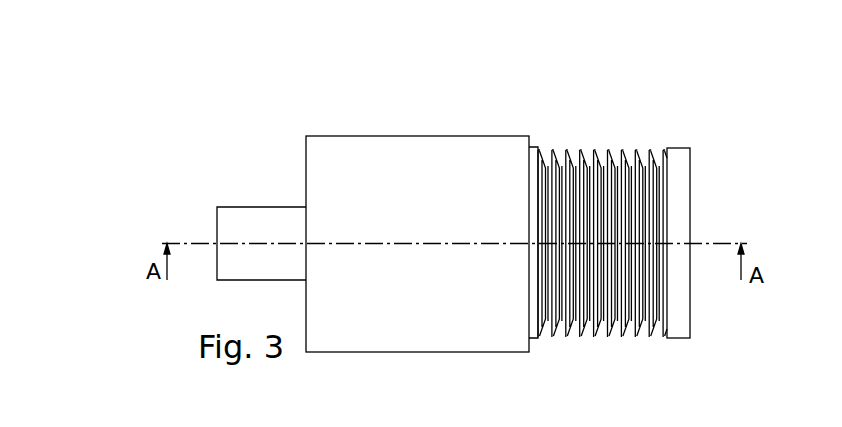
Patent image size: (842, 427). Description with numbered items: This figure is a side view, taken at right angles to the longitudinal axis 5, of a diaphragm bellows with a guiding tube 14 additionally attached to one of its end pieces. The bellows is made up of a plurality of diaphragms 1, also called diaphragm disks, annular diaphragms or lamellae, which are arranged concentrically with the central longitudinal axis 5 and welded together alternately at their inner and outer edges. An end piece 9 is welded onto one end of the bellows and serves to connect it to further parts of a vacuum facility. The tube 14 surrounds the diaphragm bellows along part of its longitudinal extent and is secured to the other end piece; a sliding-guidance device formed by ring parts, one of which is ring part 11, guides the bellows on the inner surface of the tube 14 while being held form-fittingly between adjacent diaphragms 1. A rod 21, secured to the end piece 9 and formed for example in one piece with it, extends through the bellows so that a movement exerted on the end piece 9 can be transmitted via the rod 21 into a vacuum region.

The diaphragm 1 is at (602, 310).
The central longitudinal axis 5 is at (705, 243).
The end piece 9 is at (680, 183).
The ring part 11 is at (533, 138).
The tube 14 is at (406, 178).
The rod 21 is at (252, 225).